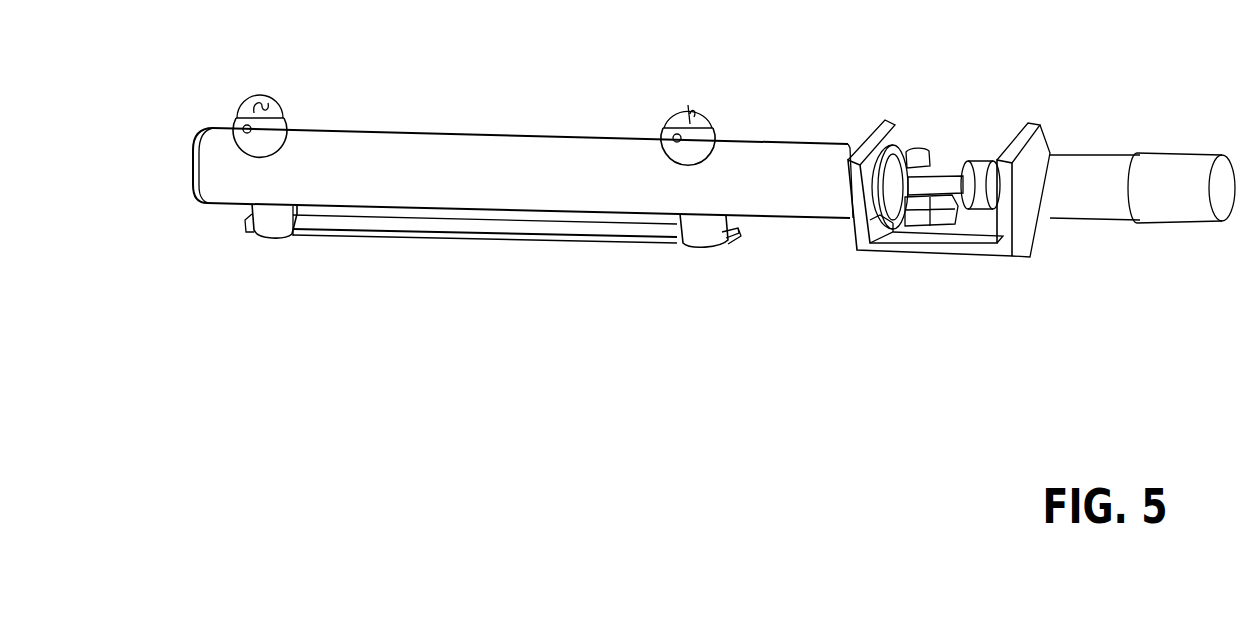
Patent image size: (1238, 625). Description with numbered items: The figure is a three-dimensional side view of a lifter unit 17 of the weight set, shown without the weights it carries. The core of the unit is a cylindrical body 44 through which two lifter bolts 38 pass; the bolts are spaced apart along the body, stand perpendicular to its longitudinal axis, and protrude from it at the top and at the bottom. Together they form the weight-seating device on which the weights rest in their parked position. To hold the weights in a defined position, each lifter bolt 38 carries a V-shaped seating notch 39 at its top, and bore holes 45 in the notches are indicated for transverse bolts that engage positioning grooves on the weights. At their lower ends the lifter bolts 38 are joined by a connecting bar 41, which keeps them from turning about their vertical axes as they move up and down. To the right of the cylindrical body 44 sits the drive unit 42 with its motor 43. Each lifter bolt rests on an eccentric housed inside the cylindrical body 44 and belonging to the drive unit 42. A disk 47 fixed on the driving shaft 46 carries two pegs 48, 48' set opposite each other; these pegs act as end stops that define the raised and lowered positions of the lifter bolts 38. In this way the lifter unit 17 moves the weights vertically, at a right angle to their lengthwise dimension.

The lifter unit 17 is at (315, 345).
The lifter bolts 38 is at (258, 128).
The V-shaped seating notches 39 is at (274, 105).
The connecting bar 41 is at (425, 235).
The drive unit 42 is at (1035, 278).
The motor 43 is at (1098, 175).
The cylindrical body 44 is at (510, 172).
The bore holes 45 is at (245, 62).
The driving shaft 46 is at (932, 178).
The disk 47 is at (890, 150).
The peg 48 is at (930, 104).
The peg 48' is at (913, 265).